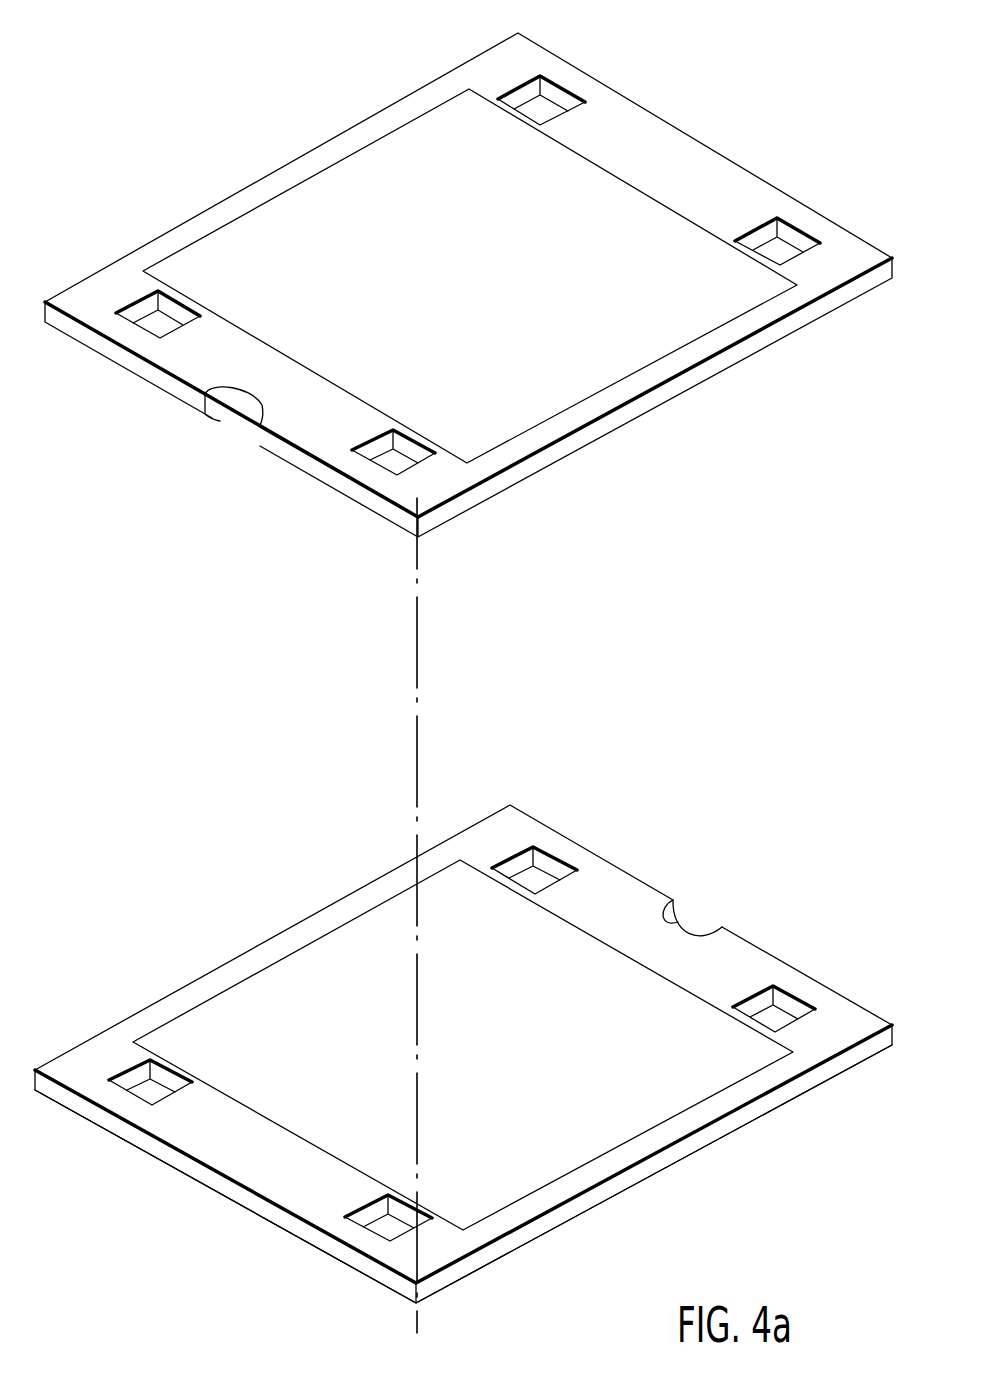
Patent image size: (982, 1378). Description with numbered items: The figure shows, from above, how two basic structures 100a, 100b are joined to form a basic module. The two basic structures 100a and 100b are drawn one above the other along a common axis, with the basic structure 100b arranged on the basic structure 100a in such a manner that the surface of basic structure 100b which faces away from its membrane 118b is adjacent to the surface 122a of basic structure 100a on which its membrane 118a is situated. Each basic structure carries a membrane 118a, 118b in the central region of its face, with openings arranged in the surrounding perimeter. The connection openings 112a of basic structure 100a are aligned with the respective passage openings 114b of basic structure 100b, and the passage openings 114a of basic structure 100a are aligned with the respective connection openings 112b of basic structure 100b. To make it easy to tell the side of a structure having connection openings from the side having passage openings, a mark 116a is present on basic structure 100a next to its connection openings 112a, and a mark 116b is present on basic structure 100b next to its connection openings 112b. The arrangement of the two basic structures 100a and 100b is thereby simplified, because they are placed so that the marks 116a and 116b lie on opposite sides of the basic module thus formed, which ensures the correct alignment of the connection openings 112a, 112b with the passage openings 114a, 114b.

The basic structure 100a is at (290, 878).
The basic structure 100b is at (413, 80).
The connection openings 112a is at (540, 877).
The connection openings 112b is at (393, 465).
The passage openings 114a is at (387, 1227).
The passage openings 114b is at (543, 113).
The mark 116a is at (690, 927).
The mark 116b is at (242, 418).
The membrane 118a is at (218, 1003).
The membrane 118b is at (307, 195).
The surface 122a is at (268, 1182).